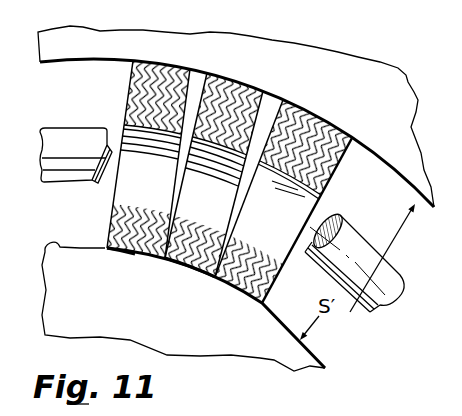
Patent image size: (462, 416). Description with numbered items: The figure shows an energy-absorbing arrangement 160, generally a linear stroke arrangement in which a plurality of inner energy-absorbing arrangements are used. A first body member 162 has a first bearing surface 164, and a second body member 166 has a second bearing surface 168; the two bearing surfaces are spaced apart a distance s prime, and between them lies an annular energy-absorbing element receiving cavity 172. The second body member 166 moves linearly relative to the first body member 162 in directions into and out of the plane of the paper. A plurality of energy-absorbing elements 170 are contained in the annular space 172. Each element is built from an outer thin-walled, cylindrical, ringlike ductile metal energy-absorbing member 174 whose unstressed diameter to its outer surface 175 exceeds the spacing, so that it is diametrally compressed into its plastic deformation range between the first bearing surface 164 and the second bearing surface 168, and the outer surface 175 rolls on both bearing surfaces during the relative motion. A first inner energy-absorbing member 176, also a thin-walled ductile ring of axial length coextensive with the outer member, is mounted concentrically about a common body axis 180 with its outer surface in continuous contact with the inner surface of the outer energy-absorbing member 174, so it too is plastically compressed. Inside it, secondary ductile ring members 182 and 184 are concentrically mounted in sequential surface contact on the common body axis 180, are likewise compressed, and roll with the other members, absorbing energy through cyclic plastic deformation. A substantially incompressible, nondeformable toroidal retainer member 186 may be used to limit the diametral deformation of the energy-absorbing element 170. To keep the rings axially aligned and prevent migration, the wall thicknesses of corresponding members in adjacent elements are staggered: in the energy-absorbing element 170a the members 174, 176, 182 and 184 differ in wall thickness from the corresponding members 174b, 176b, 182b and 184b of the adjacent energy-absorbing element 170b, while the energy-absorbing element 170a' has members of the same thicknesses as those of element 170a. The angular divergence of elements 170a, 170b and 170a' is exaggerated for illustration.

The energy-absorbing arrangement 160 is at (412, 30).
The first body member 162 is at (133, 21).
The first bearing surface 164 is at (110, 66).
The second body member 166 is at (100, 319).
The second bearing surface 168 is at (187, 308).
The energy-absorbing elements 170 is at (143, 61).
The energy-absorbing element 170a is at (170, 86).
The energy-absorbing element 170b is at (238, 84).
The energy-absorbing element 170a' is at (326, 145).
The annular energy-absorbing element receiving cavity 172 is at (80, 223).
The outer energy-absorbing member 174 is at (148, 259).
The outer energy-absorbing member 174b is at (268, 107).
The outer surface 175 is at (108, 251).
The first inner energy-absorbing member 176 is at (380, 181).
The inner energy-absorbing member 176b is at (178, 269).
The common body axis 180 is at (120, 155).
The secondary energy-absorbing member 182 is at (383, 208).
The secondary energy-absorbing member 182b is at (204, 279).
The secondary energy-absorbing member 184 is at (319, 191).
The secondary energy-absorbing member 184b is at (226, 173).
The toroidal retainer member 186 is at (356, 306).